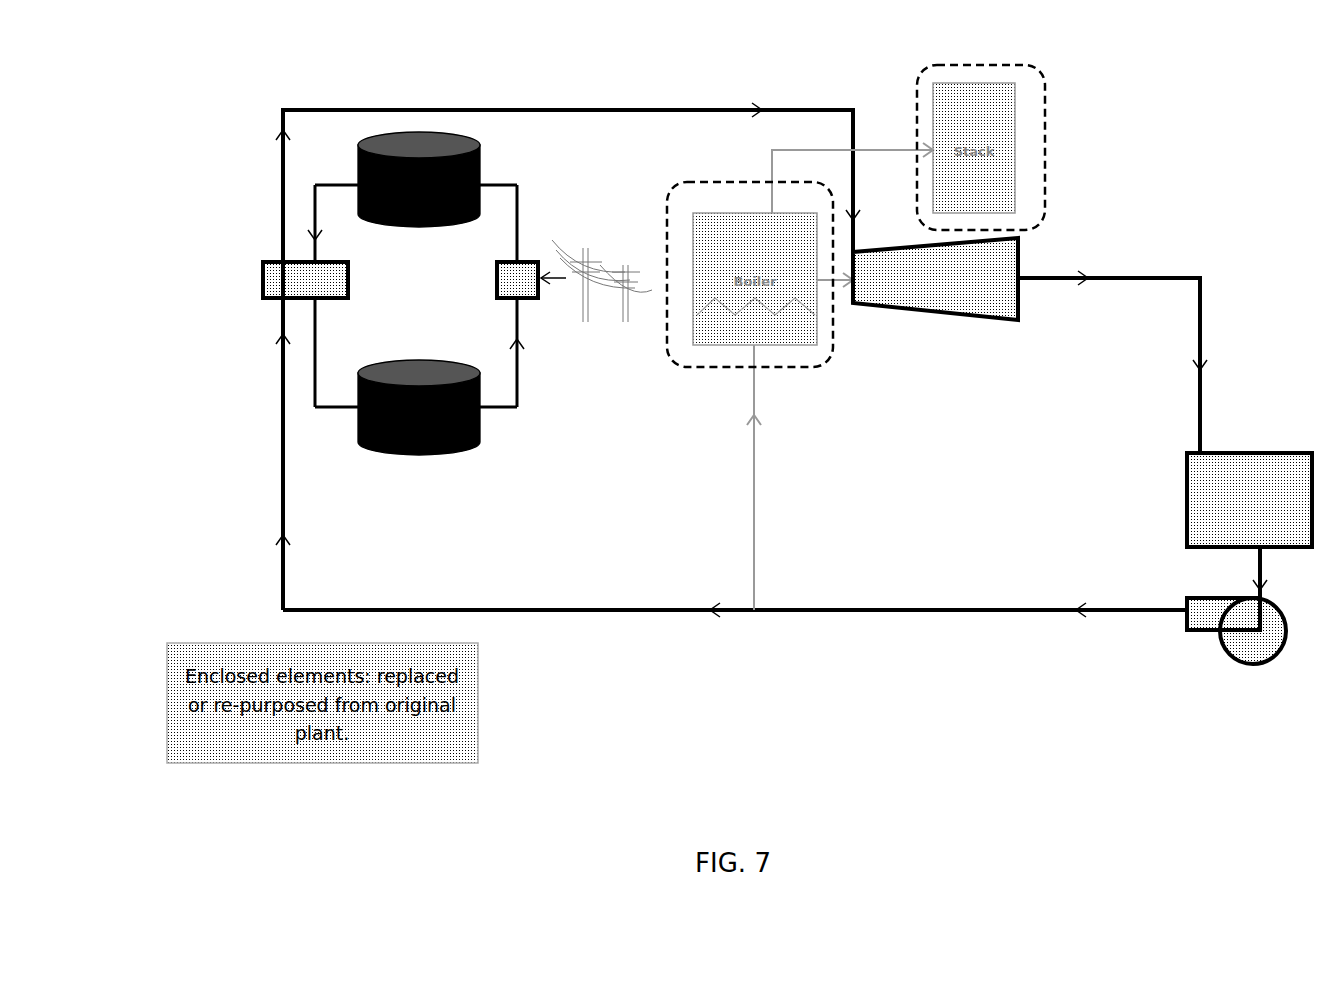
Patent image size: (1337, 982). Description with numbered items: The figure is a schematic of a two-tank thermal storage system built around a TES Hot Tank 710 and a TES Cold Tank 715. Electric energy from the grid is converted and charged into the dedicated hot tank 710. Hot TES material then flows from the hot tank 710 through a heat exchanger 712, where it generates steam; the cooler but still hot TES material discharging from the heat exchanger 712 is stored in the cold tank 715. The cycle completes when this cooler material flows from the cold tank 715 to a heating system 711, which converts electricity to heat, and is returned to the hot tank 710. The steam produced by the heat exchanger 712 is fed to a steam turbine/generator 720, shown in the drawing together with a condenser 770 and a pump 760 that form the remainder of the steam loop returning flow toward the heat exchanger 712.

The TES Hot Tank 710 is at (420, 140).
The TES Cold Tank 715 is at (415, 448).
The heating system 711 is at (540, 285).
The heat exchanger 712 is at (272, 272).
The steam turbine / generator 720 is at (935, 319).
The condenser 770 is at (1202, 500).
The pump 760 is at (1243, 635).